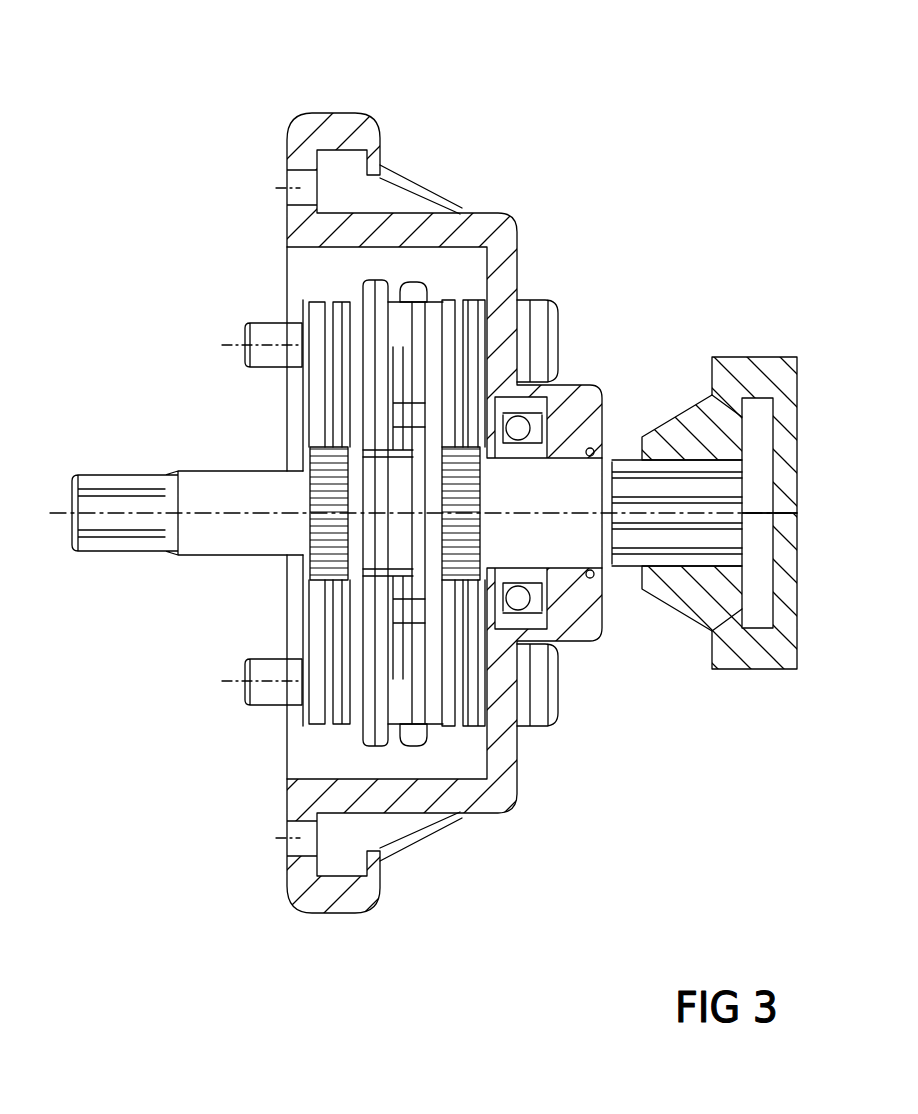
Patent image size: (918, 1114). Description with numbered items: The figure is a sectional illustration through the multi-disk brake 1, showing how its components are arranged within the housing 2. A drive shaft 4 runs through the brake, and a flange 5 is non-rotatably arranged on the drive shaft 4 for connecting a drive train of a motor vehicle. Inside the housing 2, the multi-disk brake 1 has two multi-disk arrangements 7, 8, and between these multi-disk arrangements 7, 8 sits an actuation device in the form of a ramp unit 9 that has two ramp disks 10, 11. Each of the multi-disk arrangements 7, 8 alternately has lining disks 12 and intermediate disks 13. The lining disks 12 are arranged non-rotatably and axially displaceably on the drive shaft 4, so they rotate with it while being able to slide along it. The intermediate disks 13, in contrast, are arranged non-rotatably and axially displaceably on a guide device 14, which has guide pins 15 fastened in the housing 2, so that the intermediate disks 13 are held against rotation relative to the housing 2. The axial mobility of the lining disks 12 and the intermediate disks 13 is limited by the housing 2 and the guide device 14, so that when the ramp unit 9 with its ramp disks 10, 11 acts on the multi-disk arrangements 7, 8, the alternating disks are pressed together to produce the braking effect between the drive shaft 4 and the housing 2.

The multi-disk brake 1 is at (503, 182).
The housing 2 is at (508, 247).
The drive shaft 4 is at (238, 478).
The flange 5 is at (738, 382).
The multi-disk arrangement 7 is at (480, 293).
The multi-disk arrangement 8 is at (286, 299).
The ramp unit 9 is at (432, 271).
The ramp disk 10 is at (418, 292).
The ramp disk 11 is at (380, 280).
The lining disk 12 is at (393, 741).
The intermediate disk 13 is at (500, 712).
The guide device 14 is at (256, 647).
The guide pin 15 is at (272, 694).